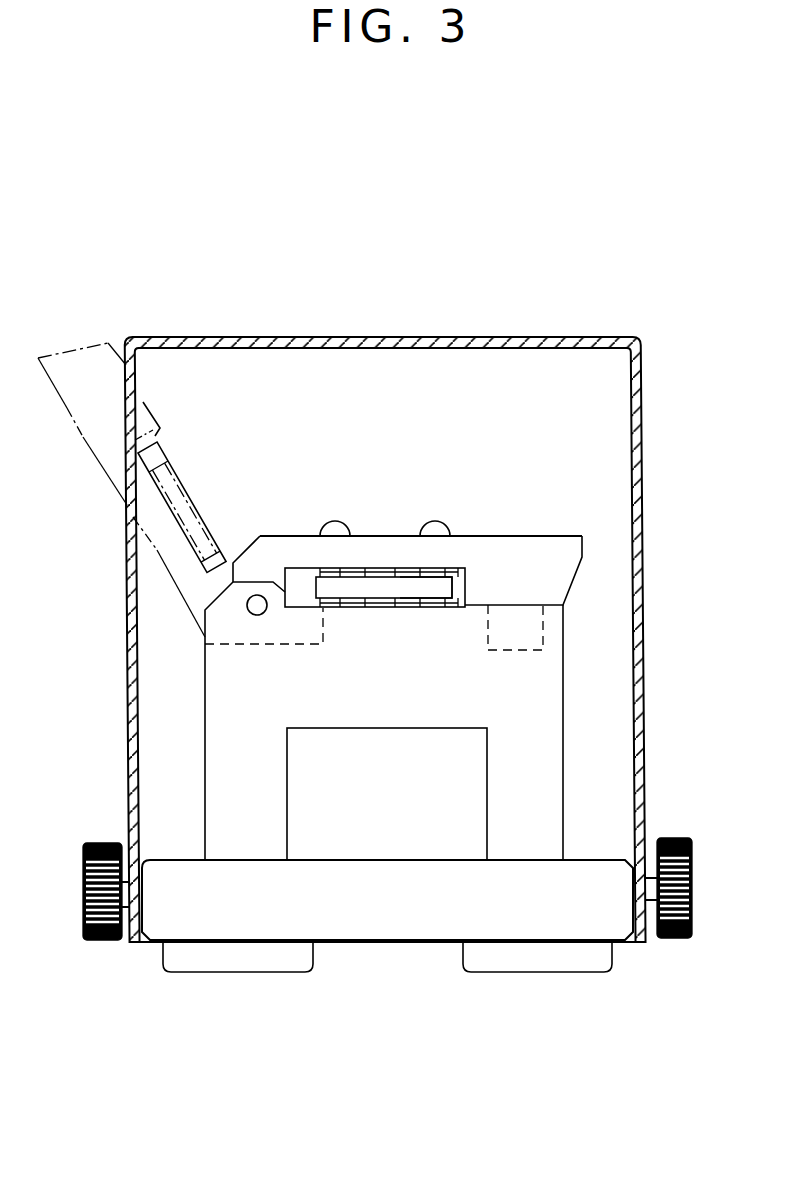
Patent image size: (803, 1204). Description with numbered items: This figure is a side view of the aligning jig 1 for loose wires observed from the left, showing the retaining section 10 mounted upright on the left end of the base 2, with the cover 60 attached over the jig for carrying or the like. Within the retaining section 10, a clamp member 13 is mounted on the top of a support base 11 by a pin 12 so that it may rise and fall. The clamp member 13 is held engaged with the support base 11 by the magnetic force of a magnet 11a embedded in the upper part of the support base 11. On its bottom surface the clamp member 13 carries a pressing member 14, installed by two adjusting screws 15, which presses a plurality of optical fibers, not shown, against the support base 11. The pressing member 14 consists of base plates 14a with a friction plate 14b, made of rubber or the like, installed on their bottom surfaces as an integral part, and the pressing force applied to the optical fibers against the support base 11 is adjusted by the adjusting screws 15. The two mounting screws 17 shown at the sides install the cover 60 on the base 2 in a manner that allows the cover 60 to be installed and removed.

The aligning jig for loose wires 1 is at (387, 303).
The cover 60 is at (513, 340).
The clamp member 13 is at (92, 453).
The retaining section 10 is at (398, 499).
The support base 11 is at (568, 741).
The magnet 11a is at (549, 636).
The pin 12 is at (257, 616).
The pressing member 14 is at (372, 566).
The base plate 14a is at (165, 452).
The friction plate 14b is at (207, 512).
The adjusting screws 15 is at (333, 533).
The base 2 is at (375, 933).
The mounting screws 17 is at (100, 843).